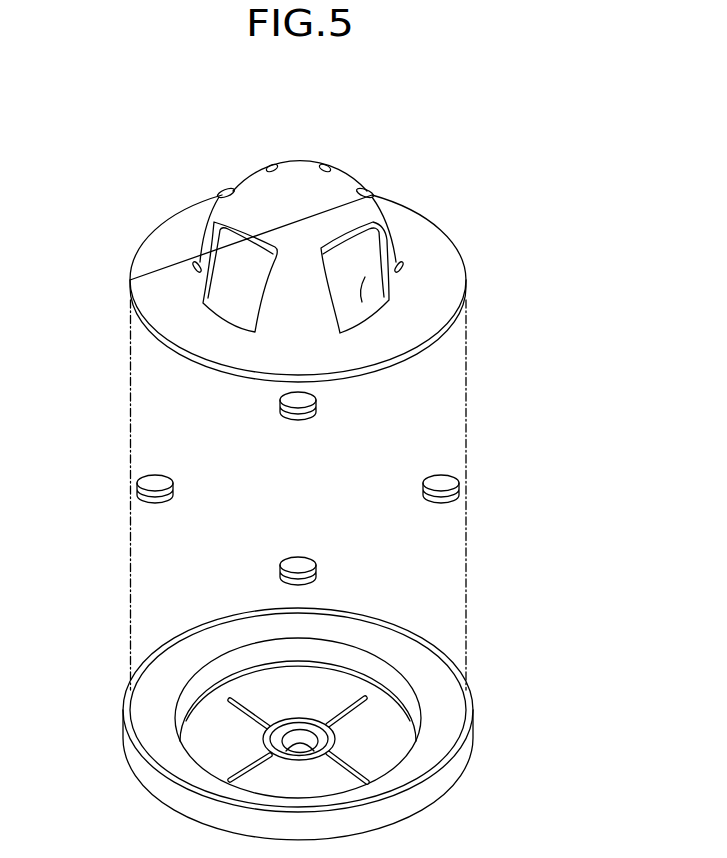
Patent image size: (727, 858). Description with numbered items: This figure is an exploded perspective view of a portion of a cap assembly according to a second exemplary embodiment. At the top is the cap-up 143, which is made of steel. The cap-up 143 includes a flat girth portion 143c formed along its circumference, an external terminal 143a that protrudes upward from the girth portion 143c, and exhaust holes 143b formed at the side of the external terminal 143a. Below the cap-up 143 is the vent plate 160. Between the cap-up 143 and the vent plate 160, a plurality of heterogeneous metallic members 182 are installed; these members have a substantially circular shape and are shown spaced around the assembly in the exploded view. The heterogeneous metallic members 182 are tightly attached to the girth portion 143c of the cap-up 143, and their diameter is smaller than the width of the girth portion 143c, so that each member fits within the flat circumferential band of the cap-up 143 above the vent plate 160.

The cap-up 143 is at (337, 260).
The external terminal 143a is at (328, 207).
The exhaust holes 143b is at (363, 281).
The flat girth portion 143c is at (414, 239).
The heterogeneous metallic members 182 is at (442, 483).
The vent plate 160 is at (443, 658).